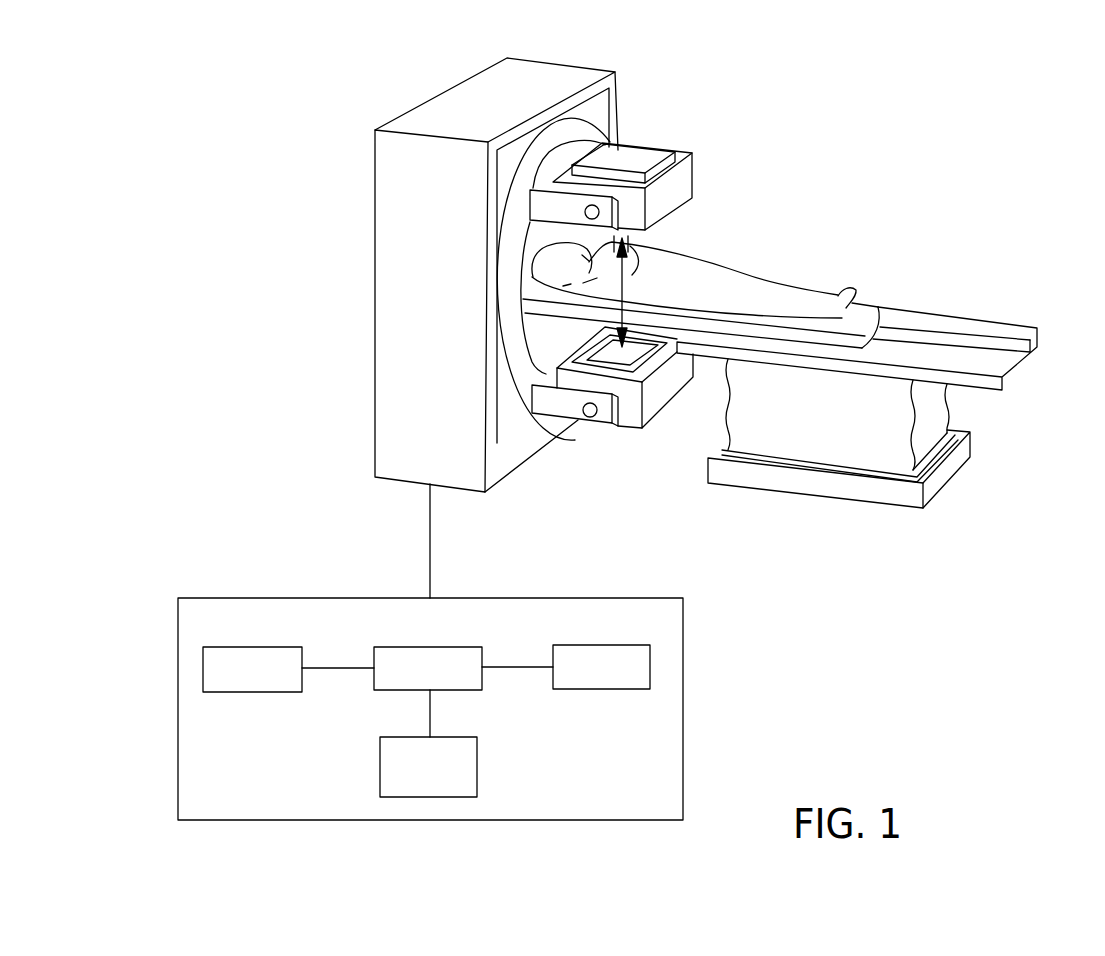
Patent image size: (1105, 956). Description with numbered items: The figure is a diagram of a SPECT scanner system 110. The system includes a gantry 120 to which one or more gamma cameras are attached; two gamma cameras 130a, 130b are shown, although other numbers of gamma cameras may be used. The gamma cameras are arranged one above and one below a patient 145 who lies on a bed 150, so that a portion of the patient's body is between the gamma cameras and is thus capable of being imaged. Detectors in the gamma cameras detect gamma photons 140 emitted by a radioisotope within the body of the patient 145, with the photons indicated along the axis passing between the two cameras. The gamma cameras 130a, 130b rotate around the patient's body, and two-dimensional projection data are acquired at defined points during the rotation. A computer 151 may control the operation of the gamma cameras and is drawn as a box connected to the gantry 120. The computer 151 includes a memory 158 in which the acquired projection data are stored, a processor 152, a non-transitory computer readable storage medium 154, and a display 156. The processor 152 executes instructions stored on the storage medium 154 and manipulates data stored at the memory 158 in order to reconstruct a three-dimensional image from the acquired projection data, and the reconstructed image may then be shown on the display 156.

The SPECT scanner system 110 is at (188, 89).
The gantry 120 is at (520, 393).
The gamma camera 130a is at (687, 177).
The gamma camera 130b is at (648, 405).
The gamma photons 140 is at (650, 261).
The patient 145 is at (787, 291).
The bed 150 is at (868, 306).
The computer 151 is at (213, 598).
The processor 152 is at (462, 646).
The non-transitory computer readable storage medium 154 is at (478, 761).
The display 156 is at (611, 690).
The memory 158 is at (256, 692).